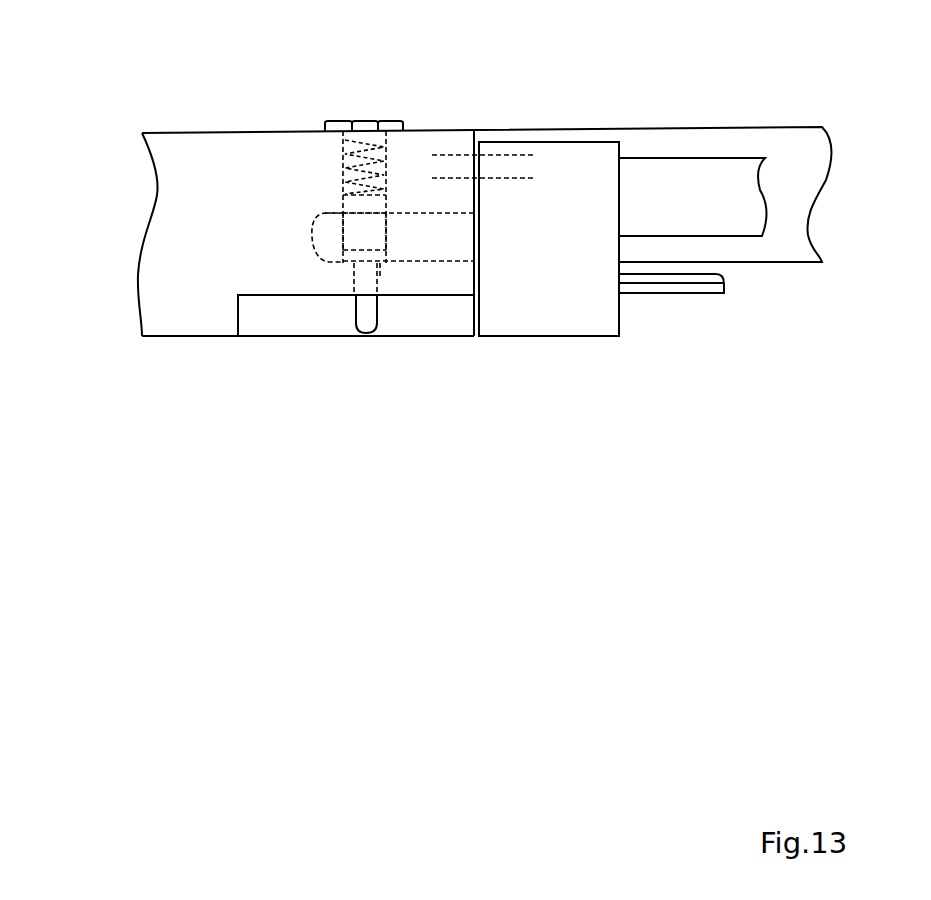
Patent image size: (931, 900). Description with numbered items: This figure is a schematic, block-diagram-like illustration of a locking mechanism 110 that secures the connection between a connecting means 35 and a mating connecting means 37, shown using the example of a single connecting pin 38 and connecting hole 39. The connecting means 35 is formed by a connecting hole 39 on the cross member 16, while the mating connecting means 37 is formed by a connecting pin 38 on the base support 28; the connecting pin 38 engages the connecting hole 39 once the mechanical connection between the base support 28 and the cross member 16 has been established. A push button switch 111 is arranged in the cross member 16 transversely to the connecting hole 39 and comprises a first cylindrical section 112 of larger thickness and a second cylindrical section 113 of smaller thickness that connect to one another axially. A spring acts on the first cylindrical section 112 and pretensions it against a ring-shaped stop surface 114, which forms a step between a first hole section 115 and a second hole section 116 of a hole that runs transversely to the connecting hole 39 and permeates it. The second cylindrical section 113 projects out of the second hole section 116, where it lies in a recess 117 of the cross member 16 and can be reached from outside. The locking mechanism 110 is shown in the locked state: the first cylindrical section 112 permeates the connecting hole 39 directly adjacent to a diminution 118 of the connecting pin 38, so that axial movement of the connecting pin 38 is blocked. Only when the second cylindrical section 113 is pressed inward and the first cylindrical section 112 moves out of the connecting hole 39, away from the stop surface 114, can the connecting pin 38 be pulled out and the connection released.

The cross member 16 is at (228, 152).
The base support 28 is at (518, 317).
The connecting means 35 is at (568, 185).
The mating connecting means 37 is at (118, 229).
The connecting pin 38 is at (433, 210).
The connecting hole 39 is at (430, 262).
The locking mechanism 110 is at (343, 107).
The push button switch 111 is at (337, 172).
The first cylindrical section 112 is at (343, 207).
The second cylindrical section 113 is at (372, 310).
The ring-shaped stop surface 114 is at (347, 267).
The first hole section 115 is at (385, 200).
The second hole section 116 is at (380, 277).
The recess 117 is at (253, 323).
The diminution 118 is at (357, 225).